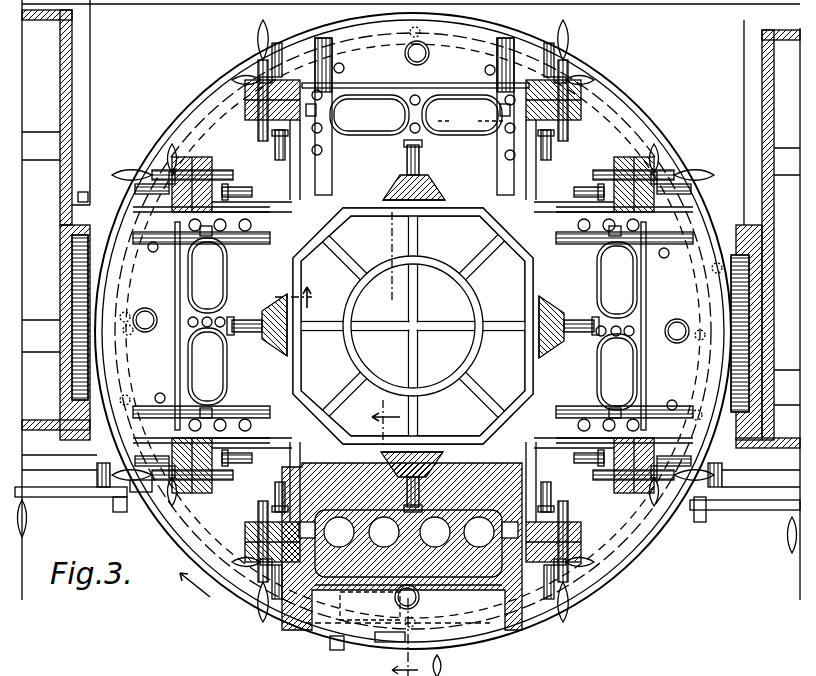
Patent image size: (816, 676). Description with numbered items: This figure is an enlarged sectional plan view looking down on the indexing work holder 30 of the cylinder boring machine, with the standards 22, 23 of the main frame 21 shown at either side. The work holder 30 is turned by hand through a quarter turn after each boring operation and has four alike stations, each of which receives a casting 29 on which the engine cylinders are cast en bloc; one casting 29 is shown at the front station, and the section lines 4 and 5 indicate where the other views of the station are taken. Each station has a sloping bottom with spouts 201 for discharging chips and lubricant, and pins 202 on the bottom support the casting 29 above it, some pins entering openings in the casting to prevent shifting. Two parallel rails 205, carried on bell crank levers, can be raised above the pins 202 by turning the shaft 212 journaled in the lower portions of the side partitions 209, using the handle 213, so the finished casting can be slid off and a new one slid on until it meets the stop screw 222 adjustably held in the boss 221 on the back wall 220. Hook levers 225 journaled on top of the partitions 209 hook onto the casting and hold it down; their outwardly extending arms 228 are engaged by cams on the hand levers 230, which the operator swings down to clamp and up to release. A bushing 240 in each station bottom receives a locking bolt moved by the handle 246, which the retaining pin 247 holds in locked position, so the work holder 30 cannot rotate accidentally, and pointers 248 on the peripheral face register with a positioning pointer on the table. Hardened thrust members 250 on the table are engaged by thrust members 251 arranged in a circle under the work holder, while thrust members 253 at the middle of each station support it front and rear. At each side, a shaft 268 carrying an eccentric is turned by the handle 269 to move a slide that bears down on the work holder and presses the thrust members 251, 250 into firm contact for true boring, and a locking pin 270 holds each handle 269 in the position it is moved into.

The machine bed 21 is at (411, 20).
The standard 22 is at (60, 75).
The standard 23 is at (782, 95).
The casting 29 is at (402, 568).
The indexing work holder 30 is at (216, 76).
The section line 4 is at (301, 297).
The section line 5 is at (386, 329).
The spout 201 is at (372, 100).
The pin 202 is at (411, 104).
The rail 205 is at (322, 176).
The partition 209 is at (409, 427).
The shaft 212 is at (432, 86).
The handle 213 is at (243, 87).
The back wall 220 is at (298, 264).
The boss 221 is at (442, 192).
The stop screw 222 is at (422, 160).
The hook lever 225 is at (318, 110).
The arm 228 is at (272, 150).
The hand lever 230 is at (259, 36).
The bushing 240 is at (425, 55).
The handle 246 is at (382, 648).
The retaining pin 247 is at (332, 651).
The pointer 248 is at (88, 318).
The thrust member 250 is at (143, 493).
The thrust member 251 is at (412, 252).
The thrust member 253 is at (410, 34).
The shaft 268 is at (100, 456).
The handle 269 is at (407, 520).
The locking pin 270 is at (115, 510).